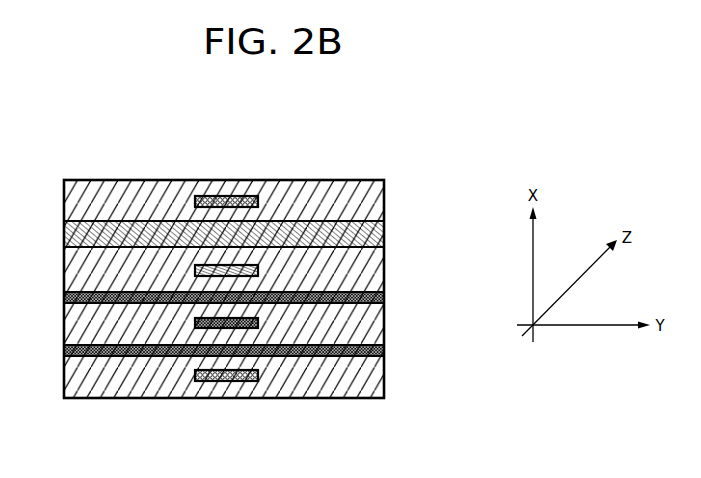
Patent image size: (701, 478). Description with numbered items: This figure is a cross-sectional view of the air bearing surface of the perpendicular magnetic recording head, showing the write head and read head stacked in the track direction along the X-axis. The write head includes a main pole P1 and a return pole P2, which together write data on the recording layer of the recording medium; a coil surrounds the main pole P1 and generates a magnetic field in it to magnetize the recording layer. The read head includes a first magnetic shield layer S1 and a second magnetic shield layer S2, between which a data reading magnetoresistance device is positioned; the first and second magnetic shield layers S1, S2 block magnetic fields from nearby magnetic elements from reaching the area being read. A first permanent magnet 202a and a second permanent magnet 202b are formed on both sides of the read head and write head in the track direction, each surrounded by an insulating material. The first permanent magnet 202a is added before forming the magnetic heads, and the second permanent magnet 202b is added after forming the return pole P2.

The second permanent magnet 202b is at (232, 196).
The first permanent magnet 202a is at (240, 381).
The return pole P2 is at (384, 233).
The main pole P1 is at (258, 272).
The first magnetic shield layer S1 is at (384, 297).
The second magnetic shield layer S2 is at (384, 349).